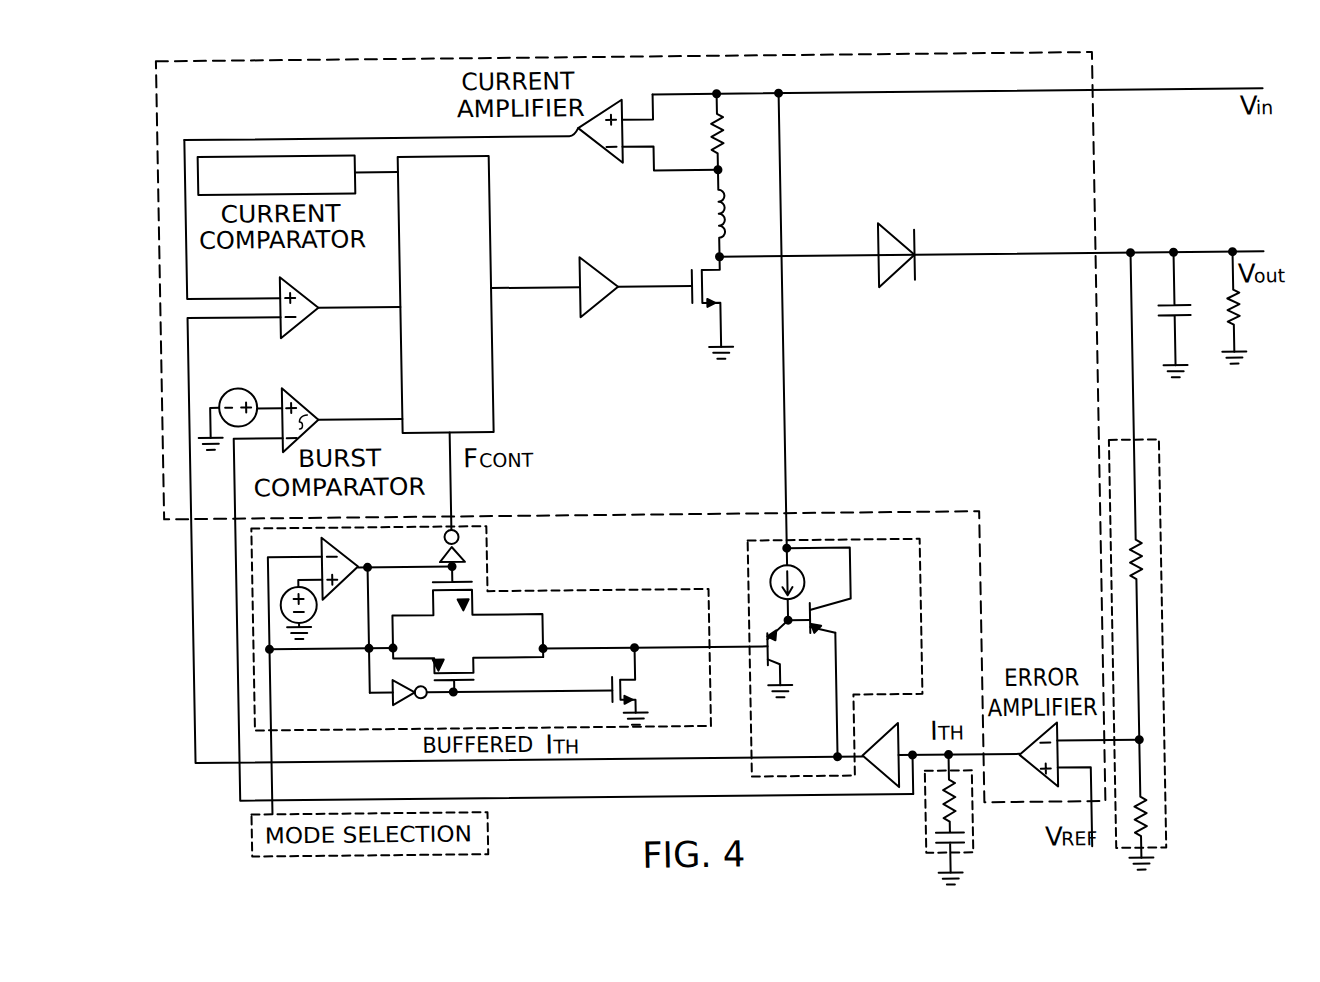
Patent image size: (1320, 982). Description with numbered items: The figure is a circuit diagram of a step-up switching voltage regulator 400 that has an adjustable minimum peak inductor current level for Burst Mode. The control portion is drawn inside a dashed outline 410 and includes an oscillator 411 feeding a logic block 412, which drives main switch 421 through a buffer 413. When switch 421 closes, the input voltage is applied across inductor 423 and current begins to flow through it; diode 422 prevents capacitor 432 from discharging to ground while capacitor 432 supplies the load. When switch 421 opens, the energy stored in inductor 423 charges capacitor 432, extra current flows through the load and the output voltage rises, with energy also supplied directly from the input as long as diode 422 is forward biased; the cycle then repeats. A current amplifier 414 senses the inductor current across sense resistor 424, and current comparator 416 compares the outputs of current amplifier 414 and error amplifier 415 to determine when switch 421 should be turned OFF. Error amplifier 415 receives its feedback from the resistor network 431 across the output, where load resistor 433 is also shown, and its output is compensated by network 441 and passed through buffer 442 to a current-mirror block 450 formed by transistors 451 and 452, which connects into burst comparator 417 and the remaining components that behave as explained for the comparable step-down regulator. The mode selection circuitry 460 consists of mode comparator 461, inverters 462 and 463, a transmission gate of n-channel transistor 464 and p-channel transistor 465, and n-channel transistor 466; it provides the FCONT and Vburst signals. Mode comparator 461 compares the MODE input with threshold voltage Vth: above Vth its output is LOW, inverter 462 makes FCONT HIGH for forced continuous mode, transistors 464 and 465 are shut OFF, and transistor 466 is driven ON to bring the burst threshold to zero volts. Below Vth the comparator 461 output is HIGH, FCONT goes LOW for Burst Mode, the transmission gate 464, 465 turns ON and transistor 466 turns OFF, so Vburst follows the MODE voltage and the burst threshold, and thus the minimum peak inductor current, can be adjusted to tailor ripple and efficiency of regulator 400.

The regulator 400 is at (580, 837).
The control circuit 410 is at (1098, 191).
The oscillator 411 is at (260, 151).
The logic circuit 412 is at (428, 153).
The driver buffer 413 is at (601, 266).
The current amplifier 414 is at (598, 138).
The error amplifier 415 is at (1024, 778).
The current comparator 416 is at (321, 304).
The burst comparator 417 is at (298, 399).
The main switch 421 is at (707, 285).
The diode 422 is at (904, 242).
The inductor 423 is at (745, 202).
The sense resistor 424 is at (724, 118).
The feedback resistor divider 431 is at (1158, 562).
The capacitor 432 is at (1179, 323).
The load resistor 433 is at (1234, 330).
The compensation network 441 is at (918, 842).
The buffer 442 is at (862, 770).
The current source circuit 450 is at (777, 616).
The transistor 451 is at (769, 654).
The transistor 452 is at (815, 616).
The mode selection circuitry 460 is at (481, 669).
The mode comparator 461 is at (330, 546).
The inverter 462 is at (463, 554).
The inverter 463 is at (390, 699).
The n-channel transistor 464 is at (454, 590).
The p-channel transistor 465 is at (450, 667).
The n-channel transistor 466 is at (633, 682).